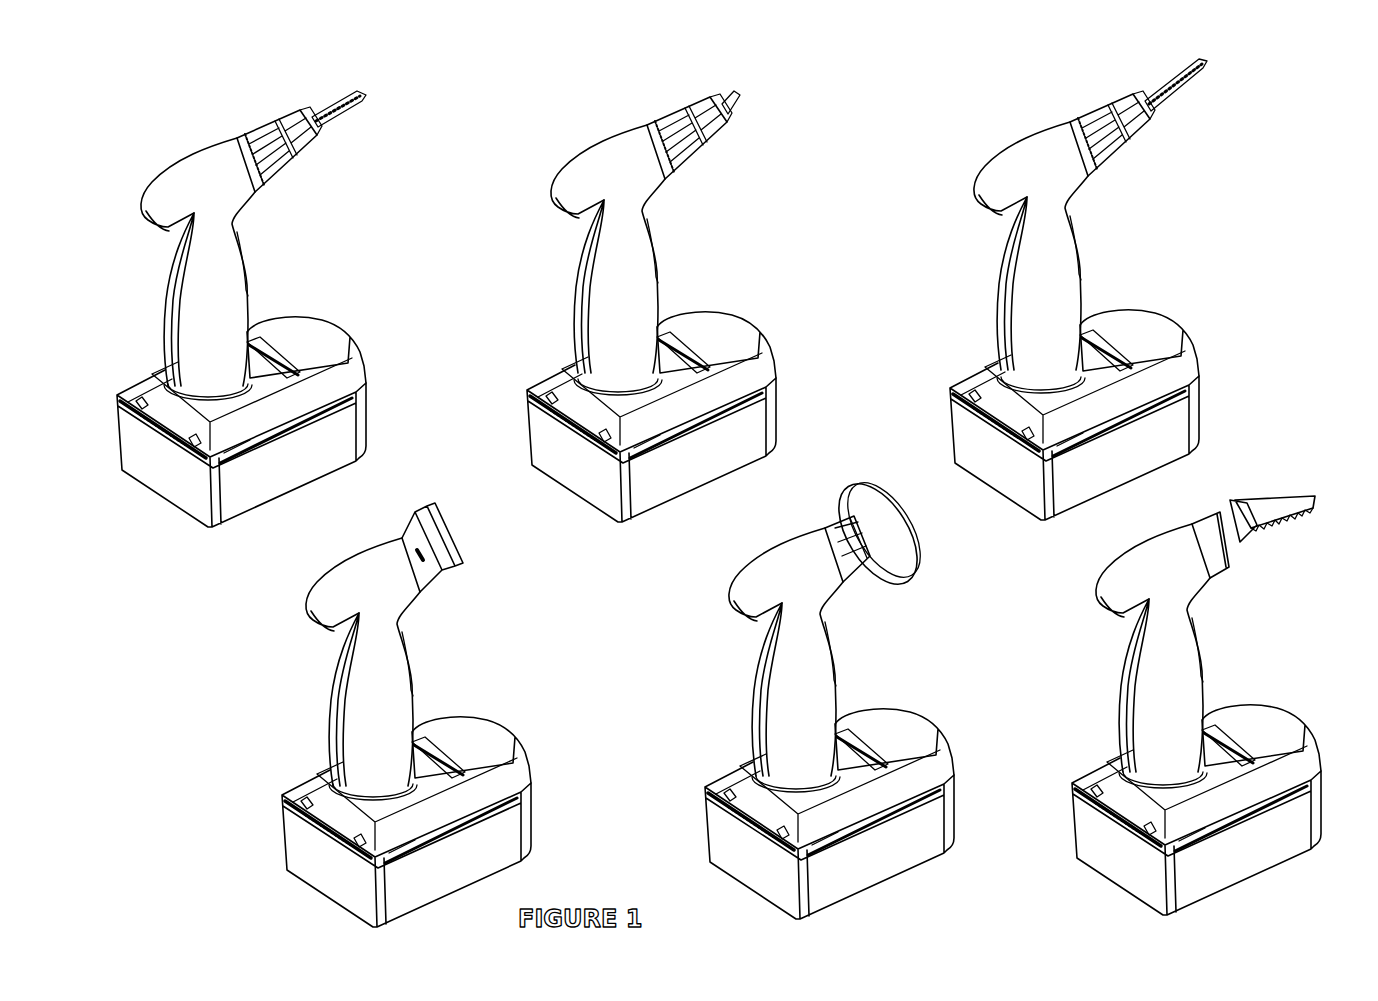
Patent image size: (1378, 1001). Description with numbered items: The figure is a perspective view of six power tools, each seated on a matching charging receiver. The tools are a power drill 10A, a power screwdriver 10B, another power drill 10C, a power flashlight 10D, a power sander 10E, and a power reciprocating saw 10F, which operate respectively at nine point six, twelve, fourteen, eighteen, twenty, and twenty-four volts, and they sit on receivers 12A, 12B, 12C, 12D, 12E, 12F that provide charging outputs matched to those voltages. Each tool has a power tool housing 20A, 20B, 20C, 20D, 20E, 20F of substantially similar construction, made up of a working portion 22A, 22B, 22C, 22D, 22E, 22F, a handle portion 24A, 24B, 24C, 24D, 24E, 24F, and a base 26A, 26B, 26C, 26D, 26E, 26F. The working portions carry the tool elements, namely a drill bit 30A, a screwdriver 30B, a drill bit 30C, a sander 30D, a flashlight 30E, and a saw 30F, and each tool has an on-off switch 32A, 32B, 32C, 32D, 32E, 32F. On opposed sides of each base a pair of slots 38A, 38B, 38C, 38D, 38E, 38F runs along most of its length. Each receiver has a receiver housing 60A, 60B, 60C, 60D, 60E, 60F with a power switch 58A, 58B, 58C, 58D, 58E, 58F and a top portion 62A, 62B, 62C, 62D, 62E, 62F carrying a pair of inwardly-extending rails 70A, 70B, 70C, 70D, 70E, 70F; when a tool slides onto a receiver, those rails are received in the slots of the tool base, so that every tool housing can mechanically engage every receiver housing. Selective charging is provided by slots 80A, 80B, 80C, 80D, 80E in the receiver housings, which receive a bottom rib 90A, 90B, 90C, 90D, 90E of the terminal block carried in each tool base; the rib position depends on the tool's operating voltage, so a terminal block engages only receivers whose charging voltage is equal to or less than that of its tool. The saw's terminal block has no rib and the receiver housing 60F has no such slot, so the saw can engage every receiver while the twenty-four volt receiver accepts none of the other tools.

The power drill 10A is at (176, 110).
The receiver 12A is at (362, 338).
The power tool housing 20A is at (240, 224).
The working portion 22A is at (200, 152).
The handle portion 24A is at (254, 290).
The base 26A is at (157, 377).
The drill bit 30A is at (322, 108).
The on-off switch 32A is at (248, 252).
The slots 38A is at (140, 405).
The power switch 58A is at (270, 360).
The receiver housing 60A is at (372, 403).
The top portion 62A is at (307, 330).
The rails 70A is at (143, 390).
The slot 80A is at (163, 467).
The bottom rib 90A is at (165, 438).
The power screwdriver 10B is at (661, 311).
The receiver 12B is at (661, 414).
The power tool housing 20B is at (633, 255).
The working portion 22B is at (591, 167).
The handle portion 24B is at (652, 287).
The base 26B is at (642, 384).
The screwdriver 30B is at (693, 128).
The on-off switch 32B is at (687, 251).
The slots 38B is at (539, 442).
The power switch 58B is at (687, 328).
The receiver housing 60B is at (660, 414).
The top portion 62B is at (716, 337).
The rails 70B is at (592, 418).
The slot 80B is at (569, 470).
The bottom rib 90B is at (534, 439).
The power drill 10C is at (1083, 289).
The receiver 12C is at (1083, 401).
The power tool housing 20C is at (1050, 255).
The working portion 22C is at (1009, 166).
The handle portion 24C is at (1074, 284).
The base 26C is at (1065, 382).
The drill bit 30C is at (1138, 117).
The on-off switch 32C is at (1109, 248).
The slots 38C is at (961, 441).
The power switch 58C is at (1108, 327).
The receiver housing 60C is at (1083, 401).
The top portion 62C is at (1139, 335).
The rails 70C is at (1015, 416).
The slot 80C is at (976, 448).
The bottom rib 90C is at (958, 437).
The power flashlight 10D is at (406, 705).
The receiver 12D is at (409, 808).
The power tool housing 20D is at (383, 664).
The working portion 22D is at (340, 579).
The handle portion 24D is at (408, 696).
The base 26D is at (396, 788).
The sander 30D is at (410, 537).
The on-off switch 32D is at (442, 660).
The slots 38D is at (290, 848).
The power switch 58D is at (445, 733).
The receiver housing 60D is at (409, 808).
The top portion 62D is at (471, 743).
The rails 70D is at (343, 822).
The slot 80D is at (309, 856).
The bottom rib 90D is at (281, 848).
The power sander 10E is at (837, 695).
The receiver 12E is at (838, 795).
The power tool housing 20E is at (810, 655).
The working portion 22E is at (770, 569).
The handle portion 24E is at (828, 687).
The base 26E is at (818, 776).
The flashlight 30E is at (903, 534).
The on-off switch 32E is at (865, 652).
The slots 38E is at (713, 836).
The power switch 58E is at (864, 720).
The receiver housing 60E is at (838, 795).
The top portion 62E is at (894, 731).
The rails 70E is at (765, 806).
The slot 80E is at (734, 843).
The bottom rib 90E is at (706, 837).
The power reciprocating saw 10F is at (1176, 690).
The receiver 12F is at (1177, 779).
The power tool housing 20F is at (1178, 651).
The working portion 22F is at (1138, 565).
The handle portion 24F is at (1195, 683).
The base 26F is at (1186, 776).
The saw 30F is at (1253, 521).
The on-off switch 32F is at (1232, 647).
The slots 38F is at (1082, 835).
The power switch 58F is at (1231, 721).
The receiver housing 60F is at (1177, 779).
The top portion 62F is at (1262, 707).
The rails 70F is at (1128, 806).